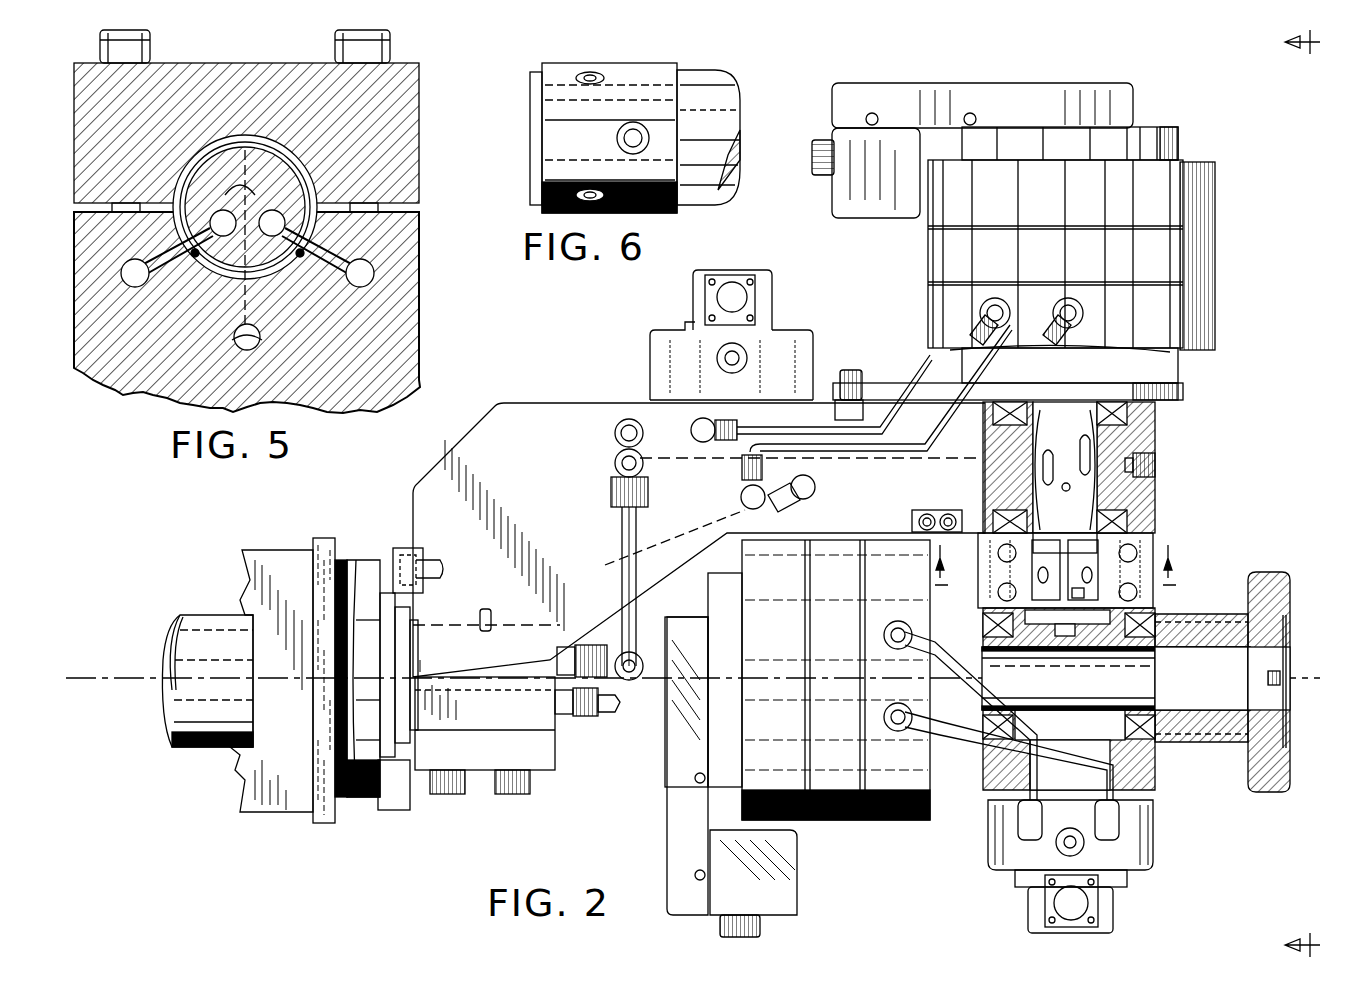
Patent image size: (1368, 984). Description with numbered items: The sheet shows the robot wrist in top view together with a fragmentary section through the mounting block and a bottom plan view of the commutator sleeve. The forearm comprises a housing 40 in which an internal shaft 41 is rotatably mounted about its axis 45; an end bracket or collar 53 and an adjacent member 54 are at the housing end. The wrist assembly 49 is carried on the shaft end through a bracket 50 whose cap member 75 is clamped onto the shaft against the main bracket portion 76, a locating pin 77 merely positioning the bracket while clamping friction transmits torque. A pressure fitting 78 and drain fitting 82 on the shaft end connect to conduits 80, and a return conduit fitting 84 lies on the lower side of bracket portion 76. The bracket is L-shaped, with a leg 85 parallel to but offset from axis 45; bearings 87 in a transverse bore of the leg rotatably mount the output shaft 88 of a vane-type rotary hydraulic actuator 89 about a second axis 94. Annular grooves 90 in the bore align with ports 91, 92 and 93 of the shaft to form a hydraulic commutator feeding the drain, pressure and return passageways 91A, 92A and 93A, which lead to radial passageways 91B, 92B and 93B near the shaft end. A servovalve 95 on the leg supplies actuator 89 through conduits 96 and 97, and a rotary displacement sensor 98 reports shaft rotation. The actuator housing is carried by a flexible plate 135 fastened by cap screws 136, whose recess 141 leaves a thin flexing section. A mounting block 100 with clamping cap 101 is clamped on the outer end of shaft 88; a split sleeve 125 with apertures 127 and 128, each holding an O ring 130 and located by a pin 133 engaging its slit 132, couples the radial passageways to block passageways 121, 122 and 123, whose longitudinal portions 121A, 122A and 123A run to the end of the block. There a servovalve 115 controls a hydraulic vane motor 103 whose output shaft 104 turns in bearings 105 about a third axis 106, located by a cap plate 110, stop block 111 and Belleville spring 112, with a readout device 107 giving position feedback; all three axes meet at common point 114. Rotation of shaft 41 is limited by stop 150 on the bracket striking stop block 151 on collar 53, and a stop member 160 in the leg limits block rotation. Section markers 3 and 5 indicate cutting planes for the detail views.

In FIG. 2, the section line 3- 3 is at (1311, 493).
In FIG. 2, the section line 5— 5 is at (1054, 577).
In FIG. 2, the housing 40 is at (270, 552).
In FIG. 2, the internal shaft 41 is at (195, 612).
In FIG. 2, the axis 45 is at (138, 675).
In FIG. 2, the wrist assembly 49 is at (580, 765).
In FIG. 2, the bracket 50 is at (440, 470).
In FIG. 2, the end bracket or collar 53 is at (360, 560).
In FIG. 2, the clamp ring 54 is at (372, 800).
In FIG. 2, the cap member 75 is at (478, 795).
In FIG. 2, the main bracket portion 76 is at (548, 420).
In FIG. 2, the locating pin 77 is at (487, 610).
In FIG. 2, the pressure fitting 78 is at (585, 645).
In FIG. 2, the conduits 80 is at (638, 525).
In FIG. 2, the drain fitting 82 is at (598, 712).
In FIG. 2, the return conduit fitting 84 is at (620, 422).
In FIG. 2, the bracket leg 85 is at (655, 420).
In FIG. 2, the bearings 87 is at (1120, 412).
In FIG. 5, the output shaft 88 is at (300, 165).
In FIG. 6, the output shaft 88 is at (530, 125).
In FIG. 2, the output shaft 88 is at (1128, 470).
In FIG. 2, the rotary hydraulic actuator 89 is at (940, 252).
In FIG. 2, the annular grooves 90 is at (1130, 437).
In FIG. 2, the drain port 91 is at (1070, 487).
In FIG. 2, the pressure port 92 is at (1060, 462).
In FIG. 2, the return port 93 is at (1085, 432).
In FIG. 2, the axis 94 is at (1068, 655).
In FIG. 2, the servovalve 95 is at (732, 270).
In FIG. 2, the conduit 96 is at (940, 360).
In FIG. 2, the conduit 97 is at (1040, 360).
In FIG. 2, the rotary displacement sensor 98 is at (910, 93).
In FIG. 2, the mounting block 100 is at (1160, 808).
In FIG. 2, the hydraulic vane motor 103 is at (822, 820).
In FIG. 2, the output shaft 104 is at (1190, 640).
In FIG. 2, the bearings 105 is at (935, 680).
In FIG. 2, the axis 106 is at (1297, 675).
In FIG. 2, the rotational displacement readout device 107 is at (790, 895).
In FIG. 2, the cap plate 110 is at (1283, 786).
In FIG. 2, the stop block 111 is at (1208, 625).
In FIG. 2, the Belleville washer spring 112 is at (1160, 745).
In FIG. 2, the common point 114 is at (1070, 672).
In FIG. 2, the servovalve 115 is at (988, 855).
In FIG. 5, the sleeve 125 is at (160, 140).
In FIG. 6, the sleeve 125 is at (638, 88).
In FIG. 2, the sleeve 125 is at (1065, 528).
In FIG. 2, the pin 133 is at (1065, 561).
In FIG. 2, the plate 135 is at (840, 400).
In FIG. 2, the cap screws 136 is at (856, 370).
In FIG. 2, the recess 141 is at (935, 382).
In FIG. 2, the mechanical stop 150 is at (405, 548).
In FIG. 2, the stop block 151 is at (395, 810).
In FIG. 2, the stop member 160 is at (910, 518).
In FIG. 5, the clamping cap 101 is at (278, 222).
In FIG. 5, the drain passageway 91A is at (235, 175).
In FIG. 5, the radial drain passageway 91B is at (265, 300).
In FIG. 5, the pressure passageway 92A is at (200, 290).
In FIG. 5, the radial pressure passageway 92B is at (215, 212).
In FIG. 5, the return passageway 93A is at (290, 215).
In FIG. 5, the radial return passageway 93B is at (320, 235).
In FIG. 5, the passageway 121 is at (252, 305).
In FIG. 5, the longitudinally extending portion 121A is at (255, 345).
In FIG. 5, the passageway 122 is at (175, 257).
In FIG. 5, the longitudinally extending portion 122A is at (130, 280).
In FIG. 5, the passageway 123 is at (320, 270).
In FIG. 5, the longitudinally extending portion 123A is at (365, 273).
In FIG. 5, the aperture 127 is at (185, 240).
In FIG. 5, the aperture 128 is at (320, 248).
In FIG. 5, the O ring 130 is at (215, 280).
In FIG. 6, the O ring 130 is at (585, 84).
In FIG. 5, the slit 132 is at (245, 140).